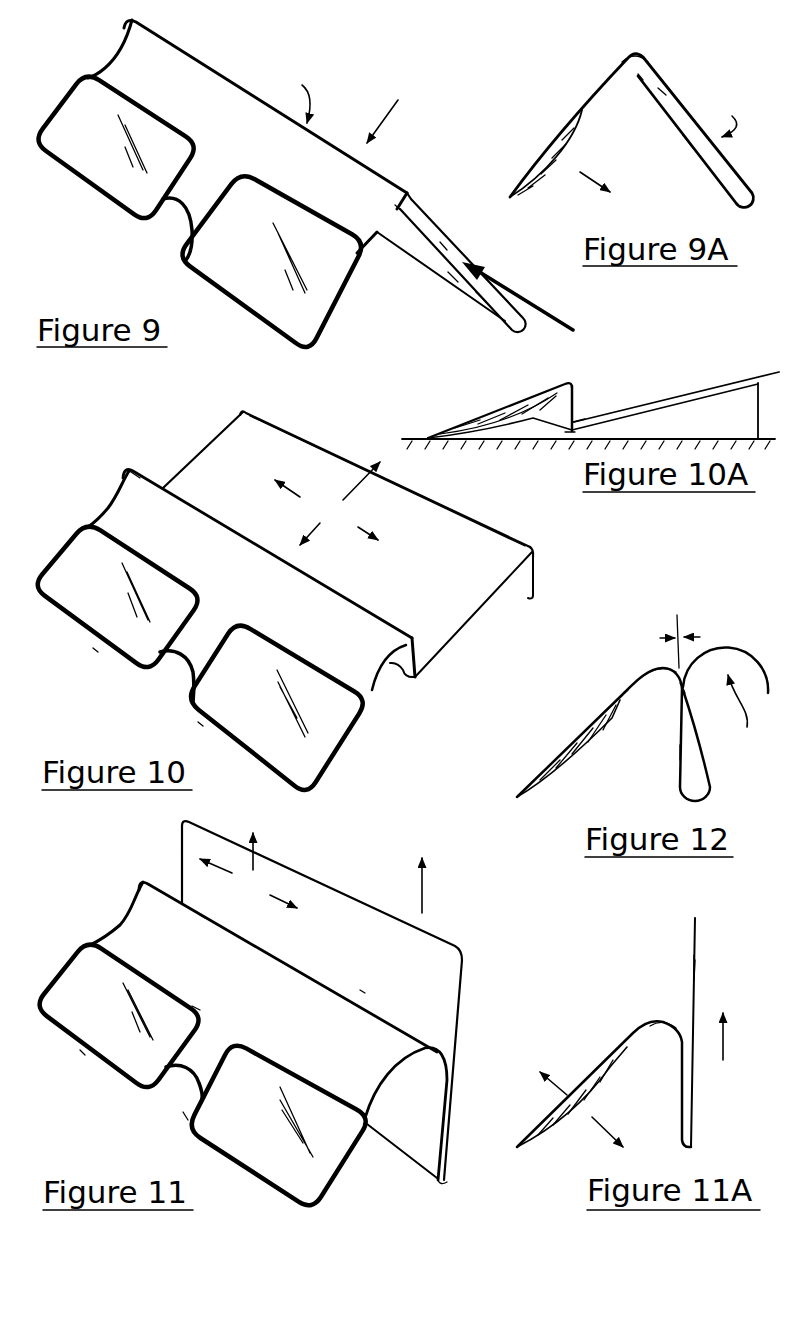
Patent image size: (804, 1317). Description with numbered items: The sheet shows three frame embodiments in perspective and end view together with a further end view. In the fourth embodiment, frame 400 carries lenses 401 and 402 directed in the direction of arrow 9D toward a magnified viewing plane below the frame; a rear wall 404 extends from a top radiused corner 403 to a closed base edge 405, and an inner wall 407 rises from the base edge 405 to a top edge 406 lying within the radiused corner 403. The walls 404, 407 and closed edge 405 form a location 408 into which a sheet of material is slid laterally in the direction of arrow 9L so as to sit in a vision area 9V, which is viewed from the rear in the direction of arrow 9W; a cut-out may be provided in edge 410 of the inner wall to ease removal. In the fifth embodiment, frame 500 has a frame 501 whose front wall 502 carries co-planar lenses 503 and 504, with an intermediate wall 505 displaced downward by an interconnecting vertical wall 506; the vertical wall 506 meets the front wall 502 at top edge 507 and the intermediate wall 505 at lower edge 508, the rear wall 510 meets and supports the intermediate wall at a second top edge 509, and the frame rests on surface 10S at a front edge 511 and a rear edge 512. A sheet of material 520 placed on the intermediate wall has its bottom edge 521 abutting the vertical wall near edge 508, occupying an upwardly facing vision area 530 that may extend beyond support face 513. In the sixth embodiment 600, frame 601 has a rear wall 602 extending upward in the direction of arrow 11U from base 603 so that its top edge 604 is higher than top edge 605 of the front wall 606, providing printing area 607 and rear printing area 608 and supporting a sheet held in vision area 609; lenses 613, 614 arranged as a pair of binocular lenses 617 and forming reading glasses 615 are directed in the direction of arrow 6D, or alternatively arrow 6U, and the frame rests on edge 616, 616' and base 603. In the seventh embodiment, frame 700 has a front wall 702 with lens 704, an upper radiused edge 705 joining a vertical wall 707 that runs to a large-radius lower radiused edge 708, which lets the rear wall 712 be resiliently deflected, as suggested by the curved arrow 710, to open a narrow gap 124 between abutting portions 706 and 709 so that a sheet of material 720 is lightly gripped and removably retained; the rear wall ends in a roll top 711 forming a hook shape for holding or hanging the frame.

In FIG. 9, the frame 400 is at (76, 57).
In FIG. 9A, the frame 400 is at (525, 105).
In FIG. 9, the lens 401 is at (105, 141).
In FIG. 9, the lens 402 is at (248, 249).
In FIG. 9A, the lens 402 is at (548, 156).
In FIG. 9, the top radiused corner 403 is at (223, 72).
In FIG. 9A, the top radiused corner 403 is at (630, 54).
In FIG. 9, the rear wall 404 is at (442, 220).
In FIG. 9A, the rear wall 404 is at (681, 105).
In FIG. 9, the closed base edge 405 is at (421, 262).
In FIG. 9A, the closed base edge 405 is at (740, 205).
In FIG. 9, the top edge 406 is at (400, 209).
In FIG. 9A, the top edge 406 is at (640, 76).
In FIG. 9, the inner wall 407 is at (453, 277).
In FIG. 9A, the inner wall 407 is at (688, 142).
In FIG. 9, the location 408 is at (481, 297).
In FIG. 9A, the location 408 is at (661, 91).
In FIG. 9, the edge 410 is at (443, 246).
In FIG. 9, the vision area 9V is at (291, 99).
In FIG. 9A, the vision area 9V is at (725, 120).
In FIG. 9, the arrow 9W is at (380, 111).
In FIG. 9, the lateral arrow 9L is at (517, 296).
In FIG. 9A, the arrow 9D is at (608, 176).
In FIG. 10, the frame 500 is at (63, 458).
In FIG. 10, the frame 501 is at (447, 628).
In FIG. 10, the front wall 502 is at (118, 518).
In FIG. 10A, the front wall 502 is at (557, 390).
In FIG. 10, the lens 503 is at (102, 595).
In FIG. 10, the lens 504 is at (262, 699).
In FIG. 10, the intermediate wall 505 is at (216, 452).
In FIG. 10, the vertical wall 506 is at (397, 667).
In FIG. 10A, the vertical wall 506 is at (582, 393).
In FIG. 10, the top edge 507 is at (352, 598).
In FIG. 10, the lower edge 508 is at (413, 683).
In FIG. 10A, the lower edge 508 is at (563, 435).
In FIG. 10, the second top edge 509 is at (507, 537).
In FIG. 10, the rear wall 510 is at (533, 573).
In FIG. 10A, the rear wall 510 is at (757, 418).
In FIG. 10, the front edge 511 is at (93, 648).
In FIG. 10, the rear edge 512 is at (530, 578).
In FIG. 10, the support face 513 is at (447, 564).
In FIG. 10A, the sheet of material 520 is at (645, 404).
In FIG. 10A, the bottom edge 521 is at (580, 421).
In FIG. 10, the vision area 530 is at (327, 503).
In FIG. 10A, the surface 10S is at (415, 438).
In FIG. 11, the sixth embodiment 600 is at (103, 916).
In FIG. 11A, the sixth embodiment 600 is at (580, 972).
In FIG. 11, the frame 601 is at (333, 908).
In FIG. 11A, the frame 601 is at (625, 1047).
In FIG. 11, the rear wall 602 is at (455, 987).
In FIG. 11A, the rear wall 602 is at (693, 964).
In FIG. 11, the base 603 is at (443, 1180).
In FIG. 11A, the base 603 is at (692, 1147).
In FIG. 11, the top edge 604 is at (298, 866).
In FIG. 11, the top edge 605 is at (180, 898).
In FIG. 11A, the top edge 605 is at (667, 1022).
In FIG. 11, the front wall 606 is at (203, 961).
In FIG. 11, the printing area 607 is at (373, 956).
In FIG. 11A, the printing area 607 is at (683, 950).
In FIG. 11A, the rear printing area 608 is at (700, 970).
In FIG. 11, the vision area 609 is at (248, 883).
In FIG. 11, the lens 613 is at (100, 1019).
In FIG. 11, the lens 614 is at (253, 1122).
In FIG. 11, the pair of reading glasses 615 is at (185, 1117).
In FIG. 11, the edge 616 is at (53, 1059).
In FIG. 11, the edge 616' is at (187, 1154).
In FIG. 11, the pair of binocular lenses 617 is at (266, 1068).
In FIG. 11, the arrow 11U is at (442, 885).
In FIG. 11A, the arrow 11U is at (744, 1036).
In FIG. 11A, the arrow 6U is at (540, 1078).
In FIG. 11A, the arrow 6D is at (616, 1129).
In FIG. 12, the frame 700 is at (675, 592).
In FIG. 12, the front wall 702 is at (623, 693).
In FIG. 12, the lens 704 is at (572, 753).
In FIG. 12, the upper radiused edge 705 is at (657, 667).
In FIG. 12, the abutting portion 706 is at (682, 688).
In FIG. 12, the vertical wall 707 is at (680, 753).
In FIG. 12, the lower radiused edge 708 is at (693, 797).
In FIG. 12, the abutting portion 709 is at (683, 688).
In FIG. 12, the rotation arrow 710 is at (747, 710).
In FIG. 12, the roll top 711 is at (730, 647).
In FIG. 12, the rear wall 712 is at (705, 758).
In FIG. 12, the sheet of material 720 is at (673, 623).
In FIG. 12, the dimension 124 is at (689, 623).